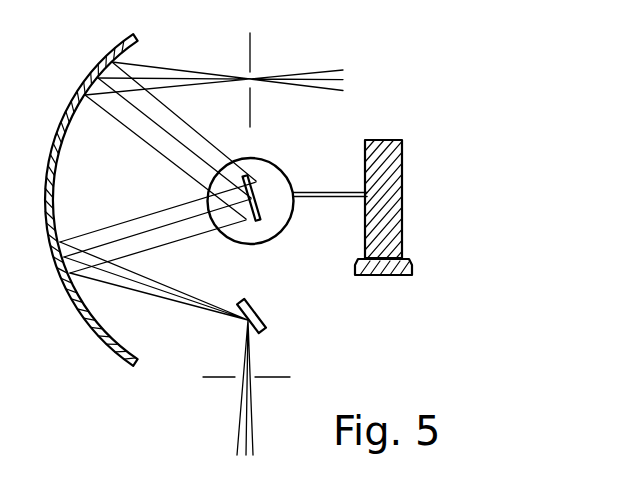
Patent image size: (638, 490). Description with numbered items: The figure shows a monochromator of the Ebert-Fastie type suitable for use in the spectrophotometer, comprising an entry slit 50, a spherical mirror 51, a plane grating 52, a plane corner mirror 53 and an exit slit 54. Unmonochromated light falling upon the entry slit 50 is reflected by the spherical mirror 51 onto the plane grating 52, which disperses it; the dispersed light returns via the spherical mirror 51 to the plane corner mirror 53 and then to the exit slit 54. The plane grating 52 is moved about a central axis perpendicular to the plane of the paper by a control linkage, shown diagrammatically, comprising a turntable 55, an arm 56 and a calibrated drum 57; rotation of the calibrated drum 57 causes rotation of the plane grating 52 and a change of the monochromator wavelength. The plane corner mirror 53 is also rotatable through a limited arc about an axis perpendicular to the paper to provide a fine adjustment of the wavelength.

The entry slit 50 is at (252, 77).
The spherical mirror 51 is at (73, 104).
The plane grating 52 is at (262, 192).
The plane corner mirror 53 is at (255, 312).
The exit slit 54 is at (255, 375).
The turntable 55 is at (268, 225).
The arm 56 is at (333, 196).
The calibrated drum 57 is at (402, 228).